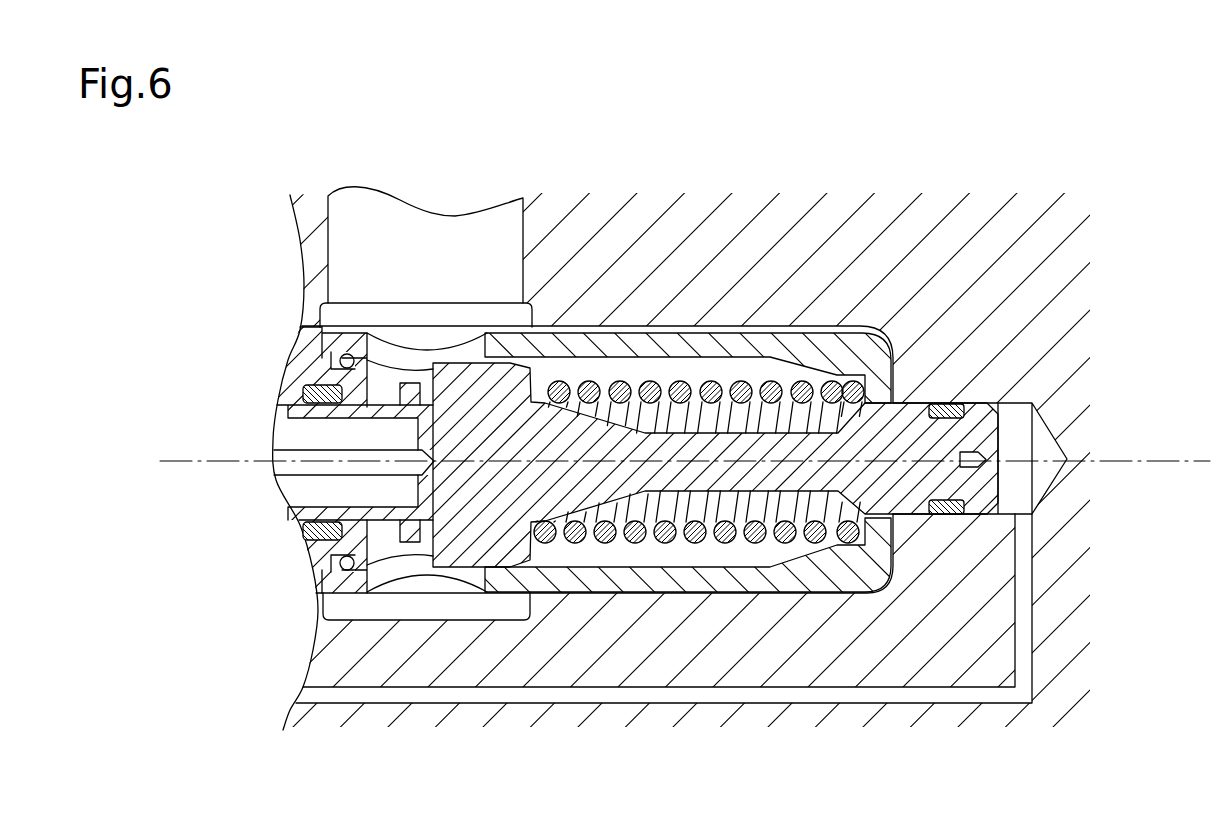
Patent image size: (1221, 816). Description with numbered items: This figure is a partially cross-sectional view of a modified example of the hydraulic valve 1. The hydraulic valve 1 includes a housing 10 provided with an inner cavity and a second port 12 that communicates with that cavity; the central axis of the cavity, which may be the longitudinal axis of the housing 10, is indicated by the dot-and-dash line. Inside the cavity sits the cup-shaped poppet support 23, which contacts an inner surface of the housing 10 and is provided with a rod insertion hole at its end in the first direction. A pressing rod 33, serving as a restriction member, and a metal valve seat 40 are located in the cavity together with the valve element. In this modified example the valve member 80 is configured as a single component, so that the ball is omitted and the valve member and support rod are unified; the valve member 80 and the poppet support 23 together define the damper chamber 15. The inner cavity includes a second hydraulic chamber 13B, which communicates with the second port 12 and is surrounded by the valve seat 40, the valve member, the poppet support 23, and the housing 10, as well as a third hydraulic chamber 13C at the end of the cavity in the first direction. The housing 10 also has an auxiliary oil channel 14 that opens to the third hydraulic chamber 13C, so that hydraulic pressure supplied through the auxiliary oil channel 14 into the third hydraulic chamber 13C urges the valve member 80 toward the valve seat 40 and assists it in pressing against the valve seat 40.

The hydraulic valve 1 is at (1107, 152).
The housing 10 is at (953, 228).
The second port 12 is at (523, 196).
The second hydraulic chamber 13B is at (350, 607).
The third hydraulic chamber 13C is at (1044, 469).
The auxiliary oil channel 14 is at (330, 709).
The damper chamber 15 is at (640, 368).
The poppet support 23 is at (612, 614).
The pressing rod 33 is at (300, 481).
The valve seat 40 is at (293, 426).
The valve member 80 is at (440, 572).